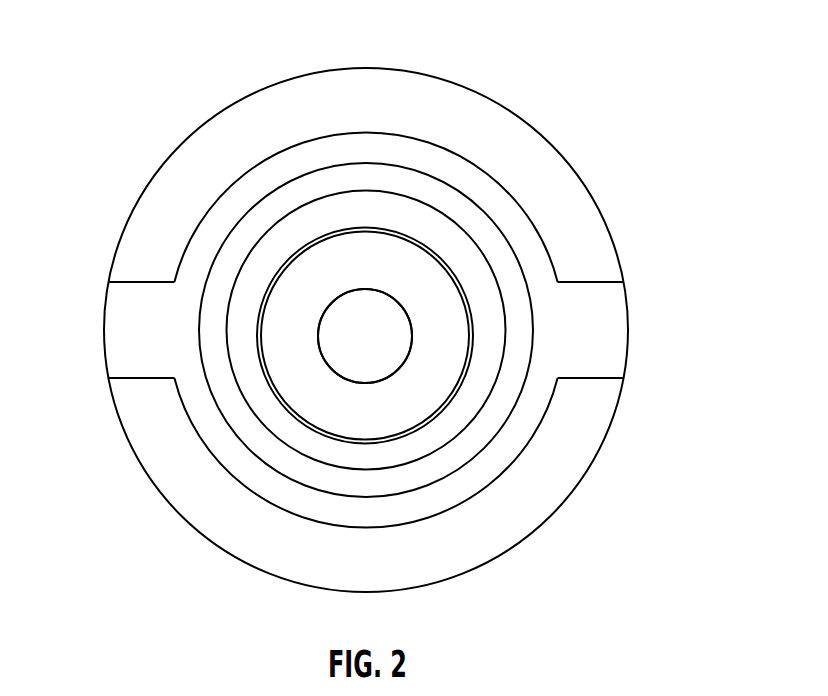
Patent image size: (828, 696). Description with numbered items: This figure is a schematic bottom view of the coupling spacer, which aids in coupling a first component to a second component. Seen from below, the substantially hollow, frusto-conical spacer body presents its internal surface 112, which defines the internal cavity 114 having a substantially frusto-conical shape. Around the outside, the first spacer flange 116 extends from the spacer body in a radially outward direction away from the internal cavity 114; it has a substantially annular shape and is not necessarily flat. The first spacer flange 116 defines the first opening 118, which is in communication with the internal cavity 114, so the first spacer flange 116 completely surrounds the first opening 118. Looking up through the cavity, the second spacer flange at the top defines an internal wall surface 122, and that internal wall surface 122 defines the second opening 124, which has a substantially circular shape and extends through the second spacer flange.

The internal surface 112 is at (255, 390).
The internal cavity 114 is at (389, 216).
The first spacer flange 116 is at (575, 212).
The first opening 118 is at (527, 338).
The internal wall surface 122 is at (398, 366).
The second opening 124 is at (373, 316).